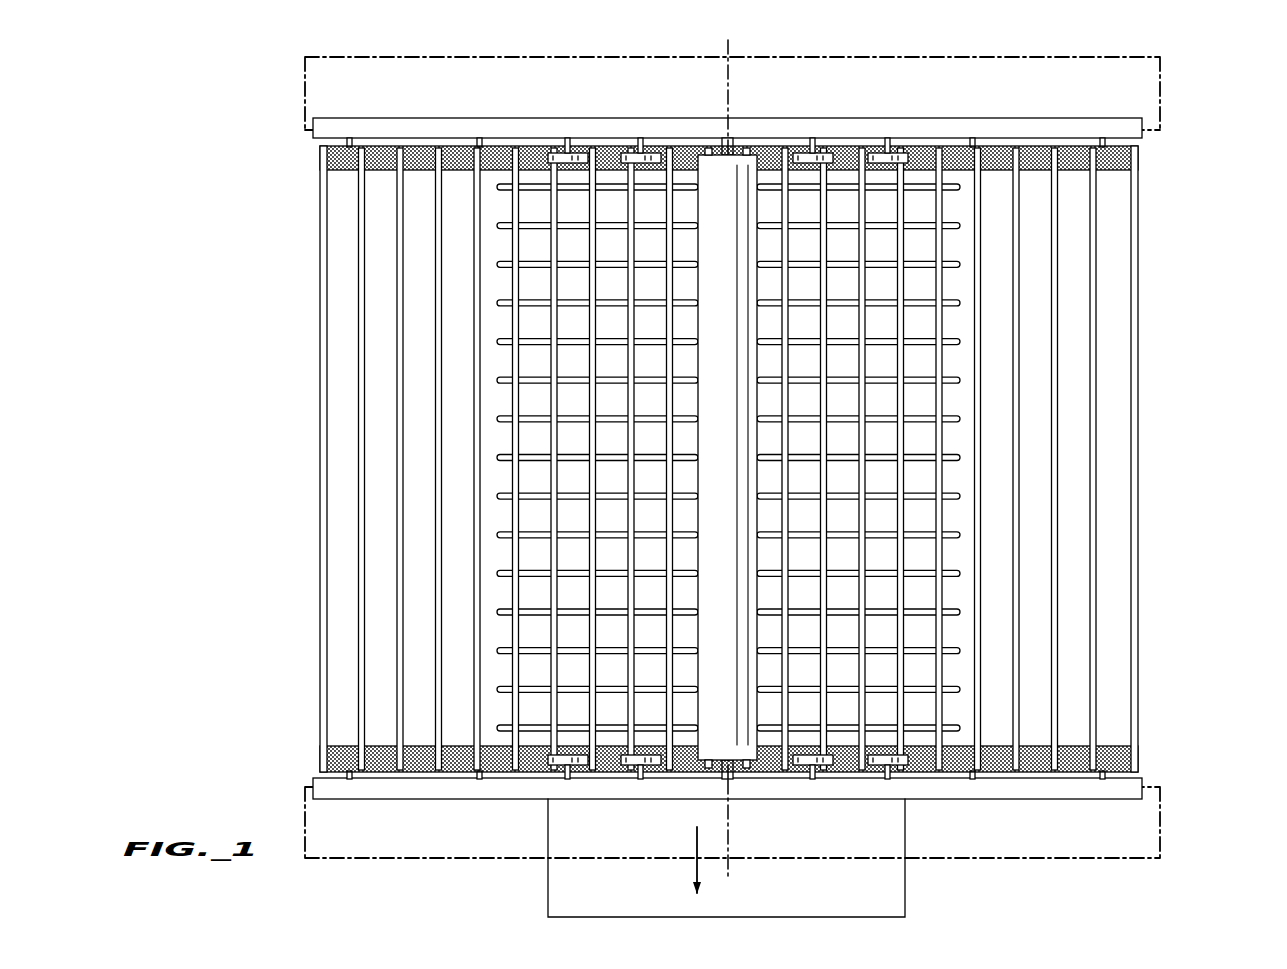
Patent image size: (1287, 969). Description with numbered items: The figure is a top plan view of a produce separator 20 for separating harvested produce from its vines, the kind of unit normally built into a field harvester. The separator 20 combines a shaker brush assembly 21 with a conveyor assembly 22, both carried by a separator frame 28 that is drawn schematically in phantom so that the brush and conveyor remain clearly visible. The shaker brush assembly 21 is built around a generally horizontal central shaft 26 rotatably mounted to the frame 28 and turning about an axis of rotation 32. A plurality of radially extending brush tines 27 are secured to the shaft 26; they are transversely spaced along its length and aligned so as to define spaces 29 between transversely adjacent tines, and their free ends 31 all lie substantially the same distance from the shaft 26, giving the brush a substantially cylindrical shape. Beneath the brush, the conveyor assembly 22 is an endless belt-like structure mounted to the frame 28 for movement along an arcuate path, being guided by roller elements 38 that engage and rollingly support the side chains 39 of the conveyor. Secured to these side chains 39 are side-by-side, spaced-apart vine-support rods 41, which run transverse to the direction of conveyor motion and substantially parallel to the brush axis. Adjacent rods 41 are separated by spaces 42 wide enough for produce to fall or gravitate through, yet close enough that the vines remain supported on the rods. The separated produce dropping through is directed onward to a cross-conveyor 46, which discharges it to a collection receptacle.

The produce separator 20 is at (298, 756).
The shaker brush assembly 21 is at (500, 635).
The conveyor assembly 22 is at (312, 448).
The central shaft 26 is at (758, 712).
The brush tines 27 is at (630, 243).
The separator frame 28 is at (1172, 97).
The spaces 29 is at (500, 212).
The free ends 31 is at (730, 87).
The axis of rotation 32 is at (730, 872).
The roller elements 38 is at (562, 766).
The side chains 39 is at (997, 762).
The vine-support rods 41 is at (397, 590).
The spaces 42 is at (383, 382).
The cross-conveyor 46 is at (548, 898).